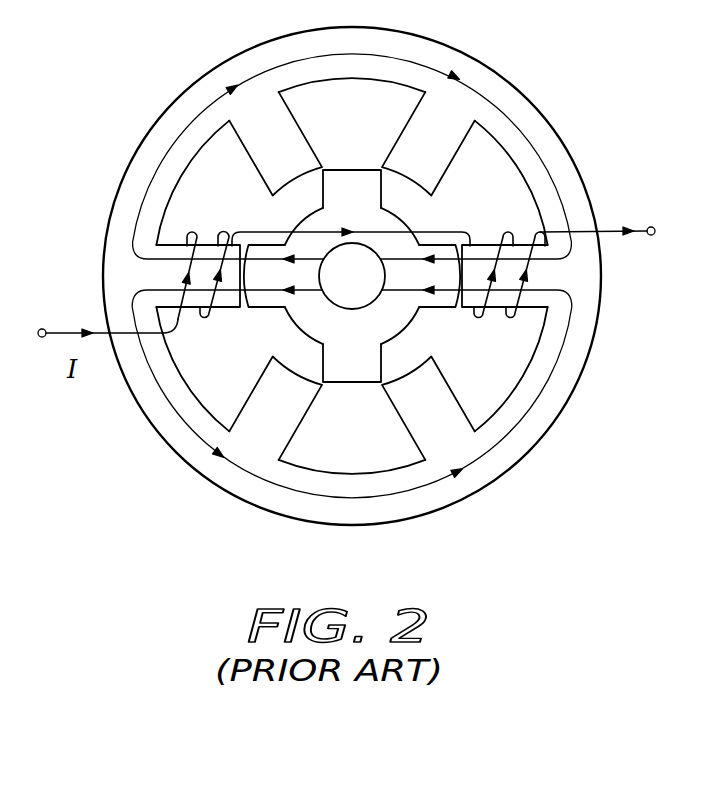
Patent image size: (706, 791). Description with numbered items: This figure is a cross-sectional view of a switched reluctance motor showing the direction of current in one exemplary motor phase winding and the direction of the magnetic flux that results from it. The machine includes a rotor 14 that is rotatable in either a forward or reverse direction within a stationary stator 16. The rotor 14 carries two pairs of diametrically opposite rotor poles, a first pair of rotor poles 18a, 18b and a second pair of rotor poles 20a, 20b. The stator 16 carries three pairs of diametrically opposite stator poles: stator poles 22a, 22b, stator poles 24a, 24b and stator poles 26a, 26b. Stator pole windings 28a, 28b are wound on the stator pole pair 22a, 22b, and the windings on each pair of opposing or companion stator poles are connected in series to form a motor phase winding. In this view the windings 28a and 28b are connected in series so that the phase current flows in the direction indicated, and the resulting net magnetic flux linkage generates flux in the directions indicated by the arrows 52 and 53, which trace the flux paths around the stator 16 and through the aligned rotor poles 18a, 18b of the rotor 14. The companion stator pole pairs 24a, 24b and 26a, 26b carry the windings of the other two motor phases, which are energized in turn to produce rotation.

The rotor 14 is at (397, 313).
The stator 16 is at (118, 244).
The rotor pole 18a is at (257, 298).
The rotor pole 18b is at (440, 296).
The rotor pole 20a is at (363, 190).
The rotor pole 20b is at (350, 382).
The stator pole 22a is at (172, 250).
The stator pole 22b is at (547, 317).
The stator pole 24a is at (283, 142).
The stator pole 24b is at (415, 432).
The stator pole 26a is at (447, 140).
The stator pole 26b is at (282, 432).
The stator pole winding 28a is at (177, 340).
The stator pole winding 28b is at (520, 295).
The flux direction arrow 52 is at (495, 107).
The flux direction arrow 53 is at (517, 427).